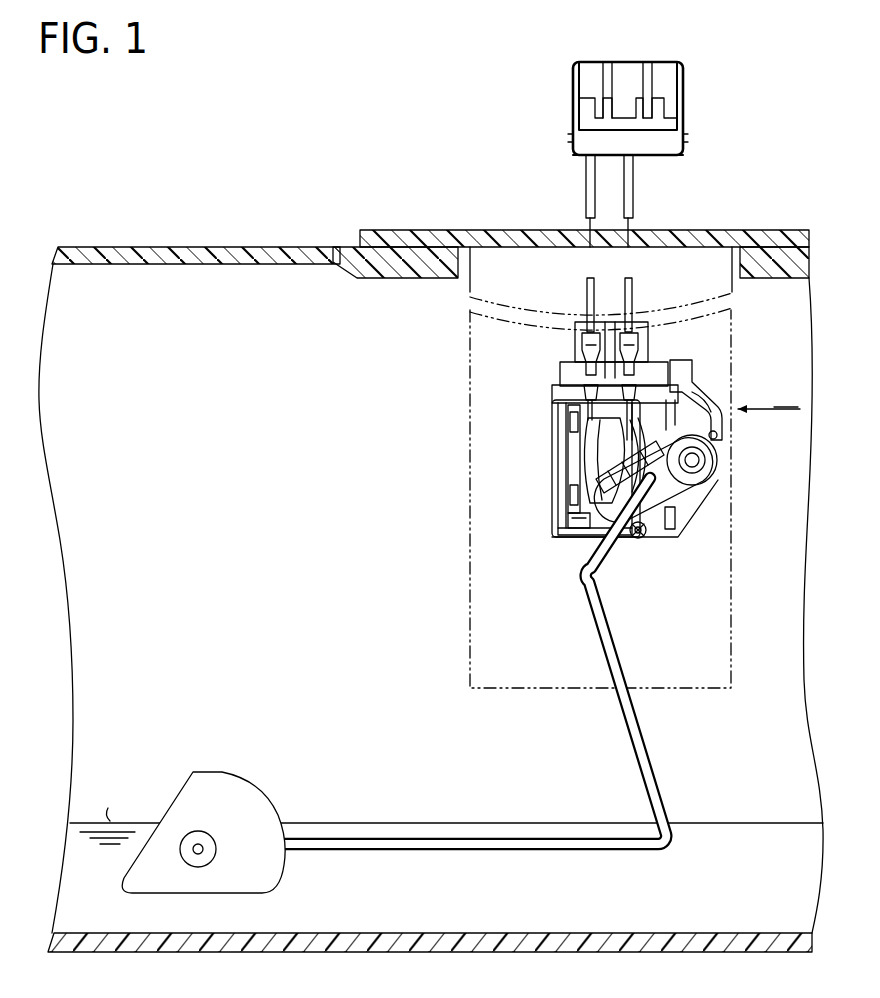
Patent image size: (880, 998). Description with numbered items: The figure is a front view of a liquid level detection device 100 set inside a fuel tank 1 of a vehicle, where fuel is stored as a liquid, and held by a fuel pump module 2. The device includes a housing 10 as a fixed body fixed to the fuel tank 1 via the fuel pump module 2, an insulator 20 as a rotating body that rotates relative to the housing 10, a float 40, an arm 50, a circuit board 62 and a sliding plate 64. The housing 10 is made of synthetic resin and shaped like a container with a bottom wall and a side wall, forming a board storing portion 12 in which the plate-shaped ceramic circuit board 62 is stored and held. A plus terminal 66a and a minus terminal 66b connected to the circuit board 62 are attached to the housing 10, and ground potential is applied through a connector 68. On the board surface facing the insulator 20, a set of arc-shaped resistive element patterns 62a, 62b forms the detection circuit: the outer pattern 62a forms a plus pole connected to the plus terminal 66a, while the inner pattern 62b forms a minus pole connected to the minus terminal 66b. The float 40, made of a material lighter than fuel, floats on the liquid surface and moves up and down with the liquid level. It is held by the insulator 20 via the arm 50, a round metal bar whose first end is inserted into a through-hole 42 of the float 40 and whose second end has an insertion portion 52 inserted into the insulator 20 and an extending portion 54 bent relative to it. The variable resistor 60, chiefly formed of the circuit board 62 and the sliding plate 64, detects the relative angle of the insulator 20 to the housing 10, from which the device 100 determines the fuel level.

The fuel tank 1 is at (272, 246).
The fuel pump module 2 is at (735, 640).
The housing 10 is at (690, 520).
The board storing portion 12 is at (570, 484).
The insulator 20 is at (700, 482).
The float 40 is at (216, 772).
The through-hole 42 is at (190, 845).
The arm 50 is at (655, 750).
The insertion portion 52 is at (702, 456).
The extending portion 54 is at (615, 550).
The variable resistor 60 is at (565, 392).
The circuit board 62 is at (609, 359).
The resistive element pattern 62a is at (578, 432).
The resistive element pattern 62b is at (592, 470).
The sliding plate 64 is at (595, 524).
The plus terminal 66a is at (585, 376).
The minus terminal 66b is at (632, 376).
The connector 68 is at (683, 96).
The liquid level detection device 100 is at (724, 366).